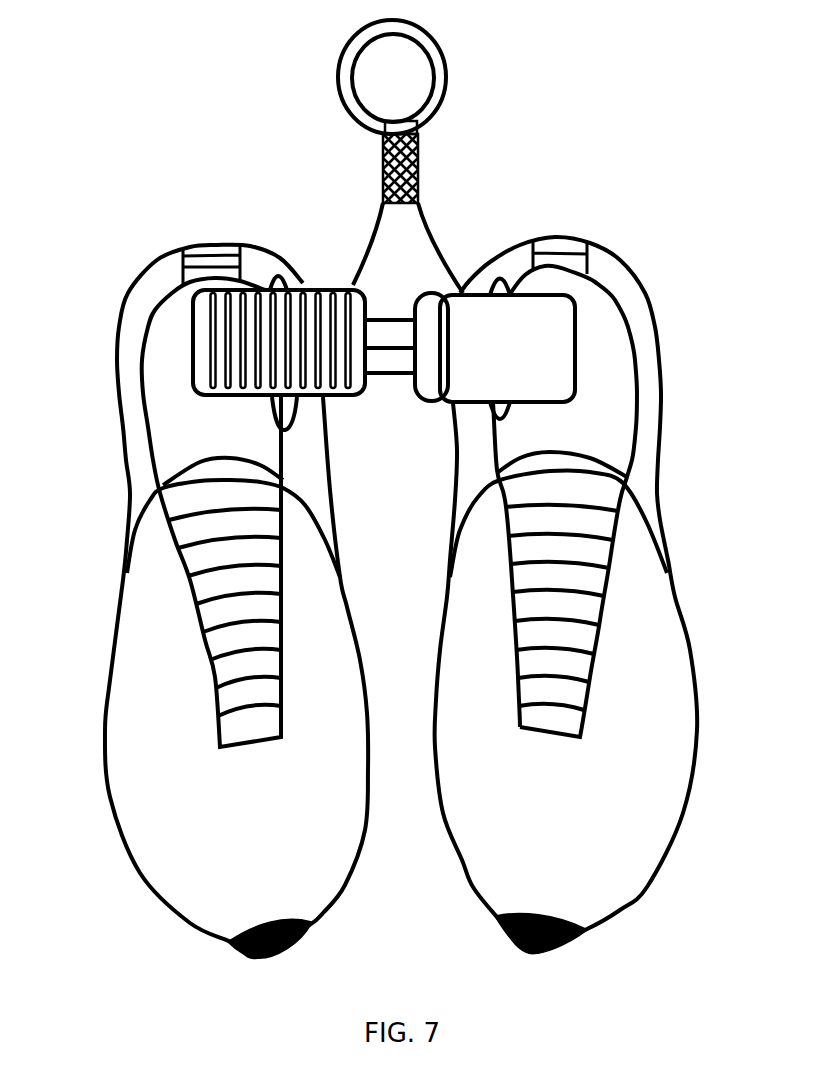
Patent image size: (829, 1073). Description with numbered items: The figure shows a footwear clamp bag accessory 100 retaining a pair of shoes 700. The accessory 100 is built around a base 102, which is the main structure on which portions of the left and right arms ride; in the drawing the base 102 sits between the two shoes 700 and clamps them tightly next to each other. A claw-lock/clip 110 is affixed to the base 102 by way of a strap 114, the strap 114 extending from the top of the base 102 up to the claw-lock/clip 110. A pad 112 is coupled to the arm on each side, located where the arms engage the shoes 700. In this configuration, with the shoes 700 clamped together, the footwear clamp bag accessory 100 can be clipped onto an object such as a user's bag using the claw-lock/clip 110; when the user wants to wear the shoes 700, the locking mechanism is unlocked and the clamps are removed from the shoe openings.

The footwear clamp bag accessory 100 is at (410, 248).
The base 102 is at (393, 381).
The claw-lock/clip 110 is at (456, 56).
The pad 112 is at (262, 273).
The strap 114 is at (448, 172).
The shoes 700 is at (109, 394).